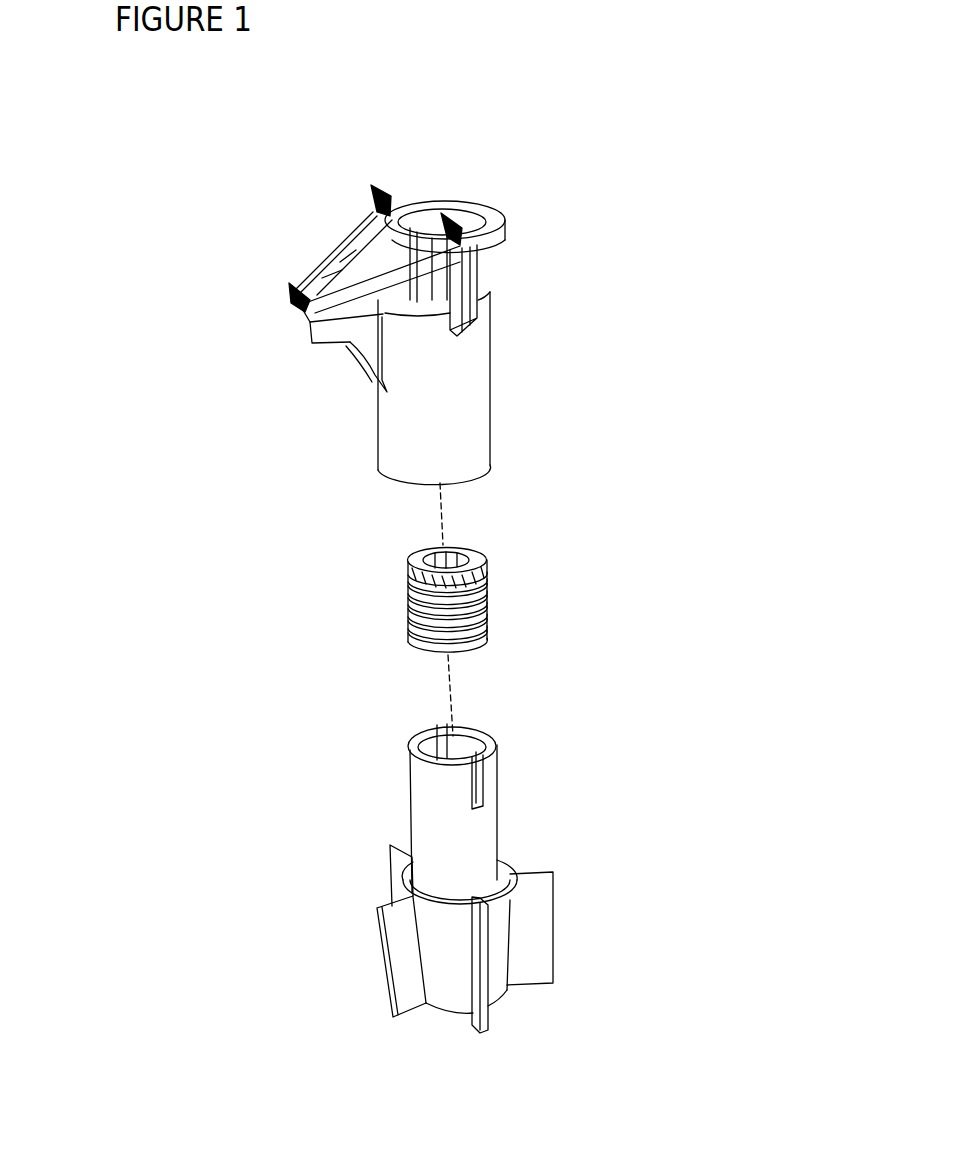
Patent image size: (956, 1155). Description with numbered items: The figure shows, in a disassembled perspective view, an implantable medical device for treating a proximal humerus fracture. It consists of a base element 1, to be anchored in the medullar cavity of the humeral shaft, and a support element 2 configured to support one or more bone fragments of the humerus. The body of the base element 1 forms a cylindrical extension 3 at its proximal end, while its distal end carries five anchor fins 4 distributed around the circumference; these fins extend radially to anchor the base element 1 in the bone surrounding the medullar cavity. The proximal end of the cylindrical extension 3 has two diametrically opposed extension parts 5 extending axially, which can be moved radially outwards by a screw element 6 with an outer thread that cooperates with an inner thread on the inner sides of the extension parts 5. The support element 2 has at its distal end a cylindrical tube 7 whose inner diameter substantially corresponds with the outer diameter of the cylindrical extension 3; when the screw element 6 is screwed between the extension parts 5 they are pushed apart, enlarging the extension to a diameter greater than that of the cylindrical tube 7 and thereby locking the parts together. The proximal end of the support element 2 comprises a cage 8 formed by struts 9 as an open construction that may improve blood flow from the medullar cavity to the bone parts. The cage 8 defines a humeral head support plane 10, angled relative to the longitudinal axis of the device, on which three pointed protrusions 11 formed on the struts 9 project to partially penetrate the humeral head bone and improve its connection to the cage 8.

The base element 1 is at (336, 816).
The support element 2 is at (524, 314).
The cylindrical extension 3 is at (471, 840).
The anchor fins 4 is at (402, 934).
The extension parts 5 is at (414, 776).
The screw element 6 is at (460, 552).
The cylindrical tube 7 is at (397, 413).
The cage 8 is at (452, 176).
The struts 9 is at (463, 293).
The humeral head support plane 10 is at (292, 242).
The pointed protrusions 11 is at (374, 190).